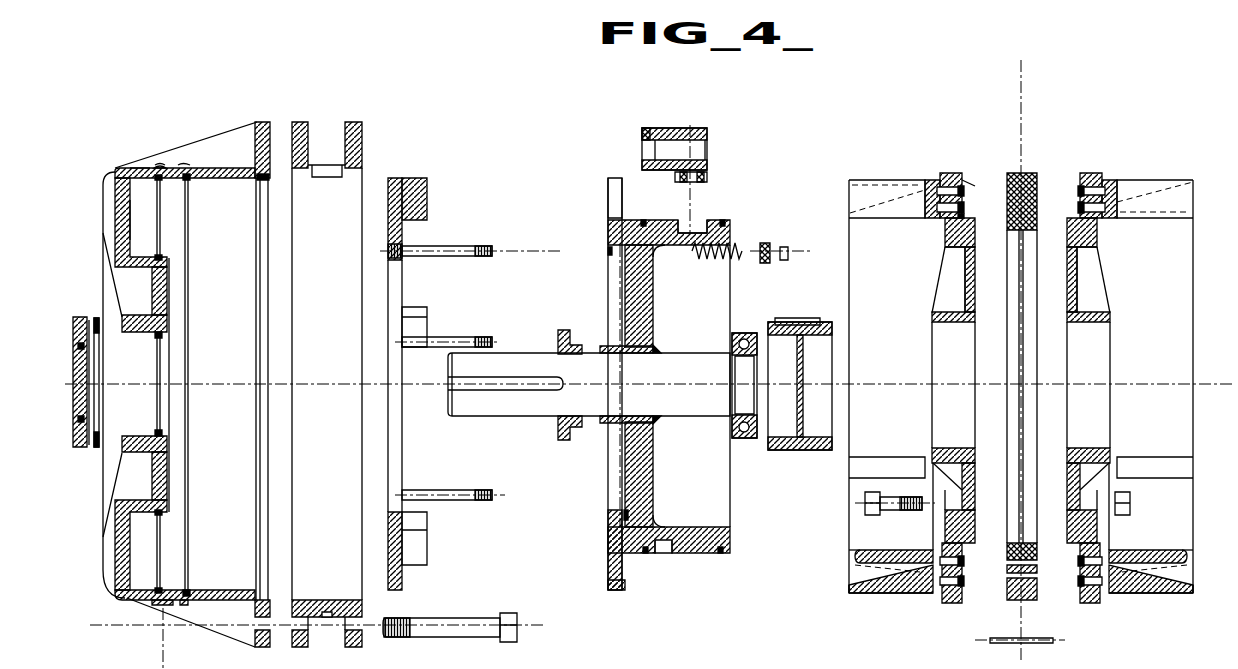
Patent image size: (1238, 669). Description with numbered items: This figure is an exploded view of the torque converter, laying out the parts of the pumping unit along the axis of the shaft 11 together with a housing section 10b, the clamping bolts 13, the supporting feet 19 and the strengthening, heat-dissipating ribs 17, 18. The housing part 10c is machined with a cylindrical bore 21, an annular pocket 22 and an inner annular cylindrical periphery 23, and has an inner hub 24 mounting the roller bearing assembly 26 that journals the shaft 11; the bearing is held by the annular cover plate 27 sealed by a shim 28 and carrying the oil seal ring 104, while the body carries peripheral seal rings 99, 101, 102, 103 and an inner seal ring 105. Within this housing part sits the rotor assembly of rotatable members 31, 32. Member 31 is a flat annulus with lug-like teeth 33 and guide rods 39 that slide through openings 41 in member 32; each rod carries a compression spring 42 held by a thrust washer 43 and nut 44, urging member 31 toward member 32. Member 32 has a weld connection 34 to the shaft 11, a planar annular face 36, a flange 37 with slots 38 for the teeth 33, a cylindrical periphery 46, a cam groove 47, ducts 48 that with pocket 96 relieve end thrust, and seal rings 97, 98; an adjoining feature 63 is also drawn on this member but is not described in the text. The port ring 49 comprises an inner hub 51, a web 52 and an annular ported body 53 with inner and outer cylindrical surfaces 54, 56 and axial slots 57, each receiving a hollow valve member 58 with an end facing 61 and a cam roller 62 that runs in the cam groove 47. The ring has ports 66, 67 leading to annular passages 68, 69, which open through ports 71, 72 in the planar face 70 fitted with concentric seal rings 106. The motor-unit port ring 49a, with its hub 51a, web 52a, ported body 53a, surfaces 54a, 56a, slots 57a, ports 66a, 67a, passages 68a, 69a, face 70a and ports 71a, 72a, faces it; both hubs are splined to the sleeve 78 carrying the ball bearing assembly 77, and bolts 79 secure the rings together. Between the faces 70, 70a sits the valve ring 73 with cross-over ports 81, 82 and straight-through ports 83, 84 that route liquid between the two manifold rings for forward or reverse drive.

The housing section 10b is at (330, 617).
The housing part 10c is at (138, 168).
The shaft 11 is at (526, 412).
The bolts 13 is at (454, 635).
The ribs 17 is at (104, 220).
The ribs 18 is at (220, 138).
The supporting feet 19 is at (267, 656).
The cylindrical bore 21 is at (122, 182).
The annular pocket 22 is at (138, 204).
The inner annular cylindrical periphery 23 is at (125, 245).
The inner hub 24 is at (145, 322).
The roller bearing assembly 26 is at (560, 335).
The annular cover plate 27 is at (83, 445).
The shim 28 is at (100, 360).
The rotatable member 31 is at (388, 238).
The rotatable member 32 is at (653, 282).
The teeth 33 is at (427, 200).
The weld connection 34 is at (655, 420).
The planar annular face 36 is at (608, 568).
The flange 37 is at (608, 586).
The slots 38 is at (608, 200).
The guide rods 39 is at (458, 255).
The openings 41 is at (608, 248).
The compression spring 42 is at (714, 260).
The thrust washer 43 is at (764, 264).
The nut 44 is at (784, 262).
The cylindrical periphery 46 is at (698, 553).
The cam groove 47 is at (702, 226).
The ducts 48 is at (632, 514).
The port ring 49 is at (862, 598).
The port ring 49a is at (1080, 600).
The inner hub 51 is at (935, 317).
The inner hub 51a is at (1108, 316).
The web 52 is at (965, 280).
The web 52a is at (1078, 278).
The annular ported body 53 is at (850, 277).
The annular ported body 53a is at (1193, 297).
The inner cylindrical peripheral surface 54 is at (858, 553).
The inner cylindrical peripheral surface 54a is at (1175, 548).
The outer cylindrical peripheral surface 56 is at (852, 595).
The outer cylindrical peripheral surface 56a is at (1180, 592).
The slots 57 is at (873, 180).
The slots 57a is at (1168, 180).
The valve member 58 is at (682, 128).
The end facing 61 is at (642, 133).
The cam roller 62 is at (708, 177).
The plate upper section 63 is at (622, 200).
The ports 66 is at (905, 562).
The ports 66a is at (1140, 560).
The ports 67 is at (893, 582).
The ports 67a is at (1142, 585).
The annular passage 68 is at (940, 558).
The annular passage 68a is at (1100, 560).
The annular passage 69 is at (936, 588).
The annular passage 69a is at (1100, 588).
The planar face 70 is at (964, 195).
The planar face 70a is at (1078, 196).
The ports 71 is at (948, 178).
The ports 71a is at (1097, 180).
The ports 72 is at (964, 212).
The ports 72a is at (1078, 212).
The valve ring 73 is at (1015, 173).
The ball bearing assembly 77 is at (744, 440).
The sleeve 78 is at (792, 452).
The bolts 79 is at (866, 506).
The cross over ports 81 is at (975, 200).
The cross over ports 82 is at (1030, 175).
The straight through ports 83 is at (1007, 584).
The straight through ports 84 is at (1007, 566).
The pocket 96 is at (168, 450).
The seal ring 97 is at (646, 553).
The seal ring 98 is at (722, 553).
The peripheral seal ring 99 is at (160, 505).
The peripheral seal ring 101 is at (158, 167).
The peripheral seal ring 102 is at (192, 182).
The peripheral seal ring 103 is at (258, 182).
The oil seal ring 104 is at (85, 418).
The inner seal ring 105 is at (160, 345).
The concentric seal rings 106 is at (966, 176).